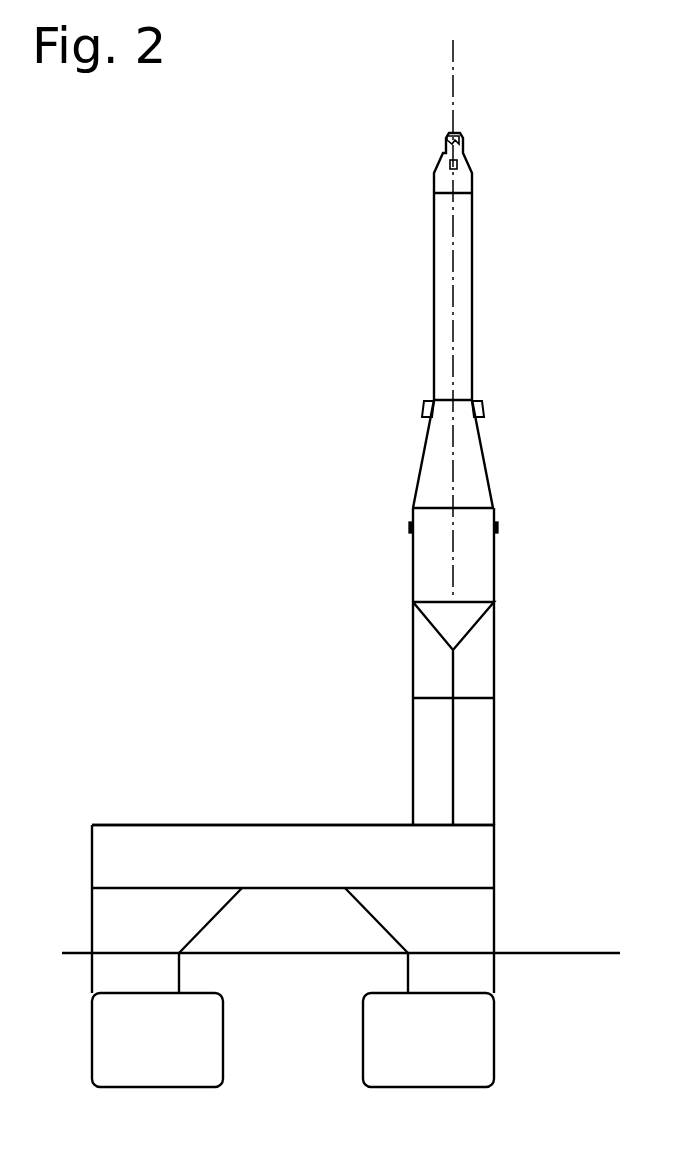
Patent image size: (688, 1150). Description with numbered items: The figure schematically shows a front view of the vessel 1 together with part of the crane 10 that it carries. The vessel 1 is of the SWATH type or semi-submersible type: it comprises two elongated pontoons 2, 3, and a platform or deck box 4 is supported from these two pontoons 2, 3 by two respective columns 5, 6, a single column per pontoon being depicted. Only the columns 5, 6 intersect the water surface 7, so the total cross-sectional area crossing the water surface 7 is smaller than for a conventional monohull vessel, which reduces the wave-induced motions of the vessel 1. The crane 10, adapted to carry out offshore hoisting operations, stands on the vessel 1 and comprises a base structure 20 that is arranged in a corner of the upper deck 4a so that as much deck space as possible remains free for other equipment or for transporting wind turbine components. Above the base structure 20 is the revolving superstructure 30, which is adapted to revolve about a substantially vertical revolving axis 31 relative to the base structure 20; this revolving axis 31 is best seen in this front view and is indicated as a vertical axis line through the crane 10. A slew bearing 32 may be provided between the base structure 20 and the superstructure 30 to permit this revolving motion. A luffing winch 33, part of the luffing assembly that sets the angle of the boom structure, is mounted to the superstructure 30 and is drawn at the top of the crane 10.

The vessel 1 is at (311, 934).
The pontoon 2 is at (127, 1047).
The pontoon 3 is at (442, 1033).
The platform or deck box 4 is at (118, 855).
The upper deck 4a is at (340, 823).
The column 5 is at (113, 975).
The column 6 is at (468, 975).
The water surface 7 is at (535, 953).
The crane 10 is at (450, 394).
The base structure 20 is at (478, 787).
The revolving superstructure 30 is at (476, 570).
The revolving axis 31 is at (471, 243).
The slew bearing 32 is at (497, 703).
The luffing winch 33 is at (448, 143).